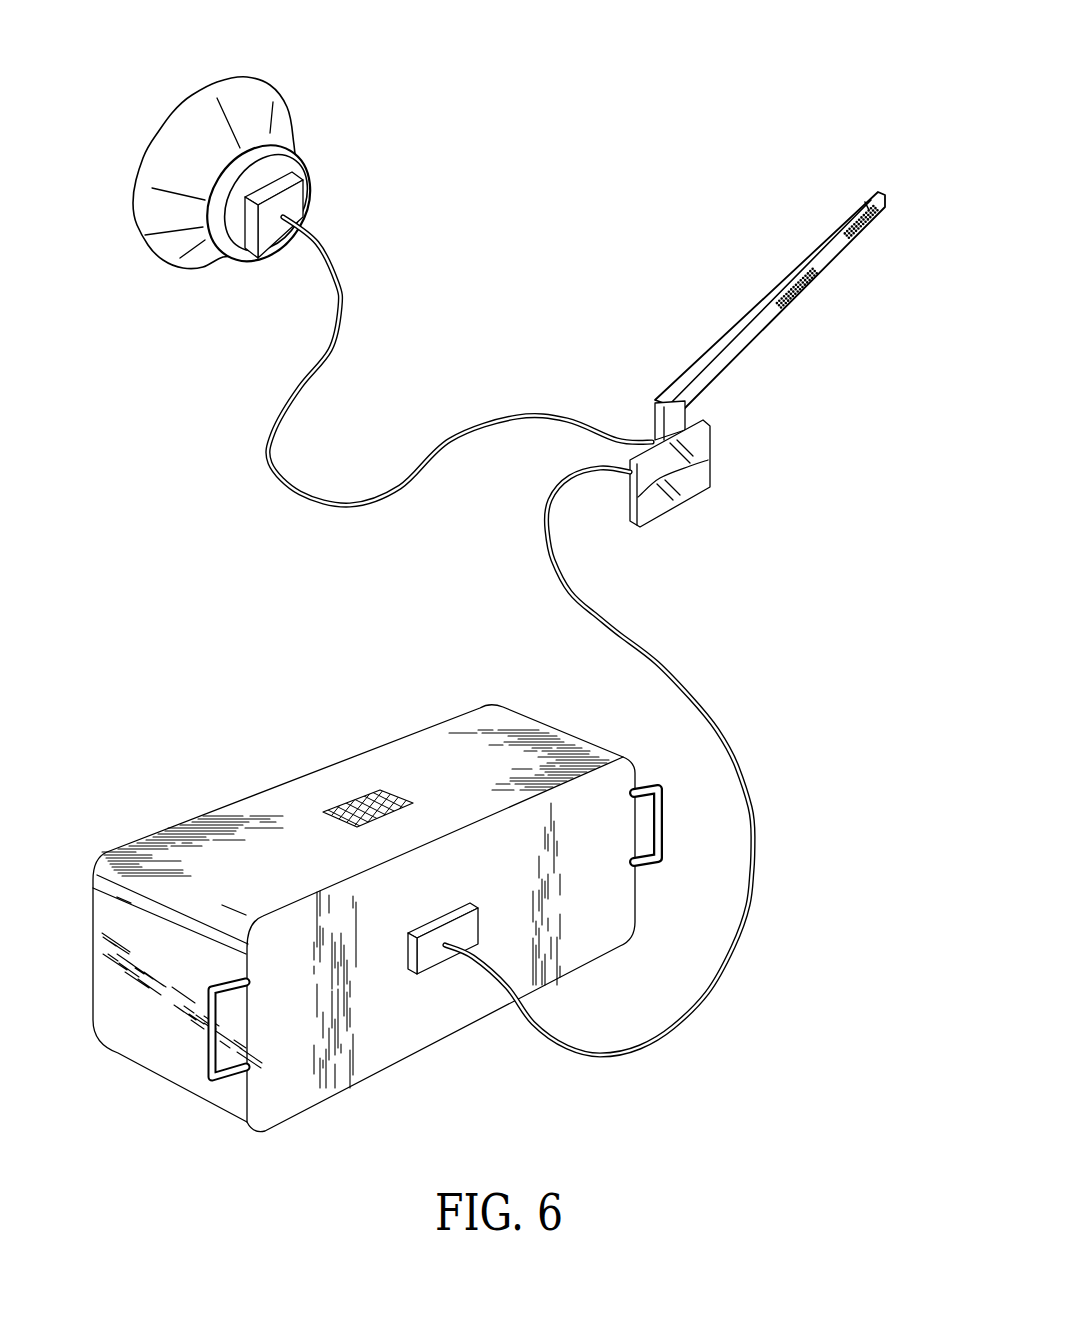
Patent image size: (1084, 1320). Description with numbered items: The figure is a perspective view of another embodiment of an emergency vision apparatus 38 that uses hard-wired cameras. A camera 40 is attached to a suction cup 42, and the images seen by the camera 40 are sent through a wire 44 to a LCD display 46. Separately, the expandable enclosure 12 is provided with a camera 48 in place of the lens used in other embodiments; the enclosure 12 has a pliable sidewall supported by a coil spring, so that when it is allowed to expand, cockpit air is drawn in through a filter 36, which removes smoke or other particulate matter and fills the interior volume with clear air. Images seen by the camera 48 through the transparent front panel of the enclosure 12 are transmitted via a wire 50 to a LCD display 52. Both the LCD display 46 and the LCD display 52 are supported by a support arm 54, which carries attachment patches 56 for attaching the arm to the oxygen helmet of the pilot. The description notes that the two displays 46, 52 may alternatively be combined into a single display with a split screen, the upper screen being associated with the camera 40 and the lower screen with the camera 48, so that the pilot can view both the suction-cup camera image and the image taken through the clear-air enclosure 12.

The enclosure 12 is at (240, 790).
The filter 36 is at (367, 790).
The emergency vision apparatus 38 is at (567, 254).
The camera 40 is at (293, 202).
The suction cup 42 is at (190, 110).
The wire 44 is at (342, 297).
The LCD display 46 is at (710, 437).
The camera 48 is at (441, 951).
The wire 50 is at (745, 775).
The LCD display 52 is at (710, 472).
The support arm 54 is at (718, 343).
The attachment patches 56 is at (868, 223).